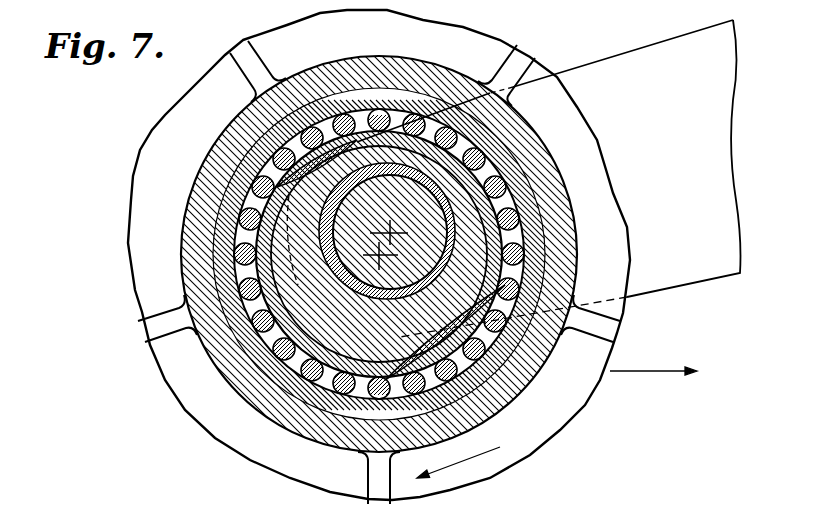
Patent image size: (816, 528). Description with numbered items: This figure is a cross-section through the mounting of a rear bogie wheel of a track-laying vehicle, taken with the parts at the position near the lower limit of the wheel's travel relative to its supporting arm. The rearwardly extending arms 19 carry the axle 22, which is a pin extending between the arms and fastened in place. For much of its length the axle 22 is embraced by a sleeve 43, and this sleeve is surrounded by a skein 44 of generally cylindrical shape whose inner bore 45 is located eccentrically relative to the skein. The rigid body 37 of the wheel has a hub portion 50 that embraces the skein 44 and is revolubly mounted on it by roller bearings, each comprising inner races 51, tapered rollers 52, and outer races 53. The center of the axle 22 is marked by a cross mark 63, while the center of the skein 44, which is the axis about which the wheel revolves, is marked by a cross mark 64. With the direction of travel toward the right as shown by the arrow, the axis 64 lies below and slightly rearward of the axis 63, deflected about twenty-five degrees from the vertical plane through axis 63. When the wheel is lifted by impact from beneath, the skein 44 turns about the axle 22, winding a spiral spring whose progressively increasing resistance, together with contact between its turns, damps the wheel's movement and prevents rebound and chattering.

The rigid body 37 is at (517, 62).
The rearwardly extending arms 19 is at (648, 57).
The axle 22 is at (408, 193).
The sleeve 43 is at (462, 180).
The skein 44 is at (462, 200).
The inner bore 45 is at (455, 228).
The hub portion 50 is at (565, 260).
The inner races 51 is at (480, 333).
The tapered rollers 52 is at (483, 357).
The outer races 53 is at (480, 378).
The cross mark 63 is at (392, 230).
The cross mark 64 is at (379, 257).